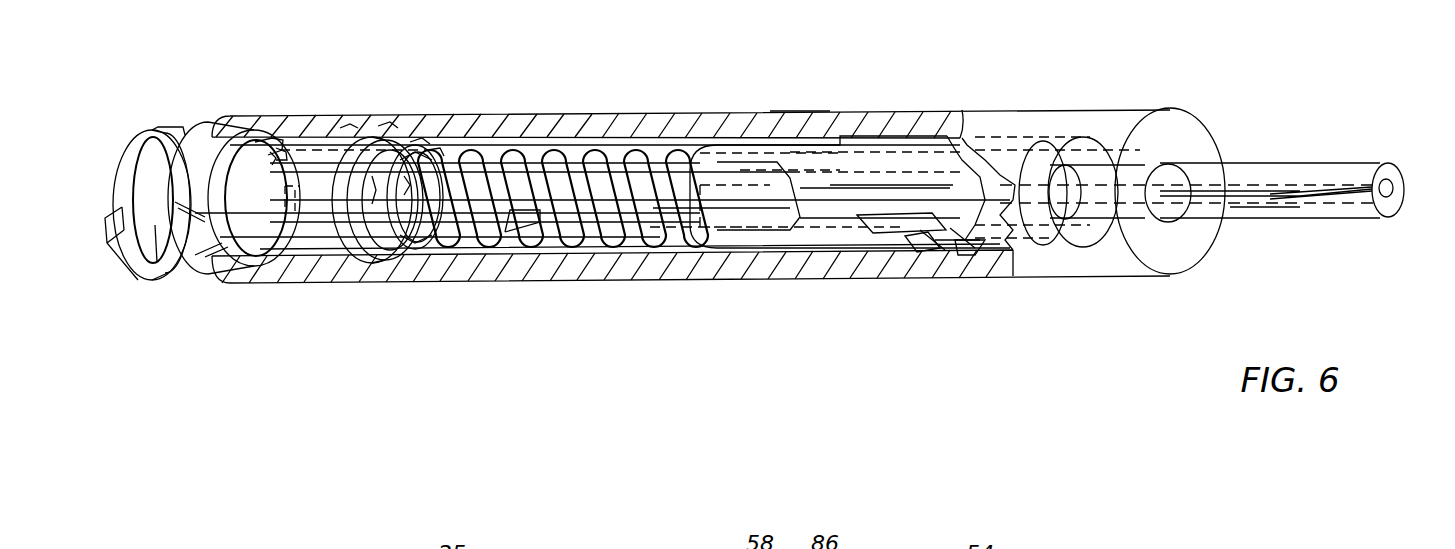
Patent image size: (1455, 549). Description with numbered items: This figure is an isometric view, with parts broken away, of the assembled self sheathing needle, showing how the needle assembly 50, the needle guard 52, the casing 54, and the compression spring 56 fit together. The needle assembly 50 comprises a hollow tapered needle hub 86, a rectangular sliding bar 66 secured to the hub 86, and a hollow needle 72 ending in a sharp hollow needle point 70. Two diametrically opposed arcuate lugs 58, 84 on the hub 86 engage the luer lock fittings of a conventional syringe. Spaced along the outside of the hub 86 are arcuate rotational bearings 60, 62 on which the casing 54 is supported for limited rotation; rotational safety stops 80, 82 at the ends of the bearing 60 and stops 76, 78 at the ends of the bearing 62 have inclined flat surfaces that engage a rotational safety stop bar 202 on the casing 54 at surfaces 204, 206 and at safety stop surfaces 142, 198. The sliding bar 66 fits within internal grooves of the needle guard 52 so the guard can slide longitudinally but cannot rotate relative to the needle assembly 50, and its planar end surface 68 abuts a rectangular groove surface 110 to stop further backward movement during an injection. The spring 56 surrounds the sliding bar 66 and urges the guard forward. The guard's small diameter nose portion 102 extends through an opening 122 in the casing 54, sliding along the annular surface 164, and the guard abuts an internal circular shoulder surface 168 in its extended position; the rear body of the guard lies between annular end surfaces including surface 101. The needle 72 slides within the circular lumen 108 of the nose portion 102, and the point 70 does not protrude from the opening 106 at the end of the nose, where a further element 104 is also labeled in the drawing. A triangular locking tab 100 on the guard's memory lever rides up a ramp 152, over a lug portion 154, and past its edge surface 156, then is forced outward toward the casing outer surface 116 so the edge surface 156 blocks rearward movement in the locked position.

The needle assembly 50 is at (777, 220).
The needle guard member 52 is at (1037, 143).
The casing member 54 is at (594, 110).
The compression spring 56 is at (613, 147).
The arcuate projection or lug 58 is at (183, 130).
The arcuate rotational bearing 60 is at (233, 260).
The arcuate rotational bearing 62 is at (347, 228).
The sliding bar portion 66 is at (745, 167).
The planar end surface 68 is at (790, 162).
The needle point 70 is at (1357, 198).
The hollow needle 72 is at (1287, 188).
The rotational safety stop 76 is at (420, 143).
The rotational safety stop 78 is at (492, 135).
The rotational safety stop 80 is at (262, 132).
The rotational safety stop 82 is at (345, 128).
The arcuate projection or lug 84 is at (123, 253).
The needle hub 86 is at (157, 262).
The locking tab 100 is at (960, 248).
The annular end surface 101 is at (1052, 153).
The nose portion 102 is at (1253, 160).
The needle tip 104 is at (1397, 207).
The opening 106 is at (1397, 183).
The needle guard shaft circular lumen 108 is at (1263, 198).
The rectangular groove surface 110 is at (1017, 157).
The outer surface 116 is at (793, 111).
The opening 122 is at (1173, 163).
The safety stop surface 142 is at (410, 243).
The ramp 152 is at (900, 250).
The lug portion 154 is at (917, 233).
The edge surface 156 is at (920, 237).
The annular surface 164 is at (1143, 160).
The internal circular shoulder surface 168 is at (1093, 147).
The safety stop surface 198 is at (432, 152).
The rotational safety stop bar 202 is at (383, 130).
The surface 204 is at (275, 150).
The surface 206 is at (278, 145).